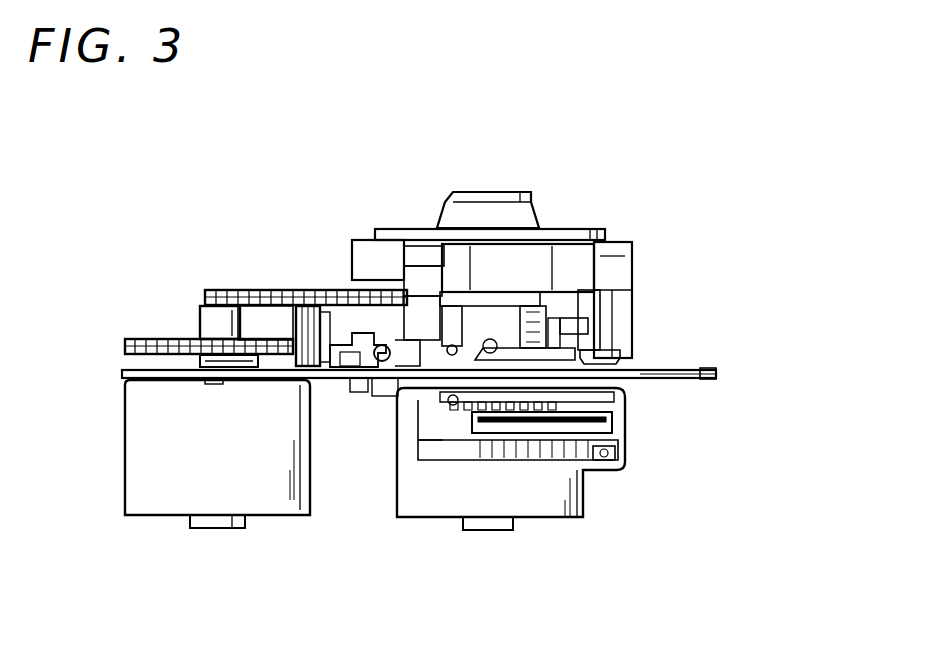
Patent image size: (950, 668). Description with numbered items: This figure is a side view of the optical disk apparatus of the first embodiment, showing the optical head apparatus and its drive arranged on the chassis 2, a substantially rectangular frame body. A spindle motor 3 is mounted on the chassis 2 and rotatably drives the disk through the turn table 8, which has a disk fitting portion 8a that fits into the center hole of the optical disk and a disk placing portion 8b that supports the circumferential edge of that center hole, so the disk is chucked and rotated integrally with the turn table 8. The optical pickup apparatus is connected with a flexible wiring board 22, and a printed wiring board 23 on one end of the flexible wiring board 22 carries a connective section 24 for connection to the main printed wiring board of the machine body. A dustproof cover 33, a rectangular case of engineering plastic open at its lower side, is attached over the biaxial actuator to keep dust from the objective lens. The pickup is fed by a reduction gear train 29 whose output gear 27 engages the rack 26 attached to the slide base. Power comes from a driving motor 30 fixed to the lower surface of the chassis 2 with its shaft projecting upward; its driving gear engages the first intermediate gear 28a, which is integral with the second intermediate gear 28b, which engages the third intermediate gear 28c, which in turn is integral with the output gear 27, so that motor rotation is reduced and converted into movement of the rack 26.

The chassis 2 is at (716, 376).
The spindle motor 3 is at (546, 500).
The turn table 8 is at (573, 132).
The disk fitting portion 8a is at (484, 226).
The disk placing portion 8b is at (566, 240).
The flexible wiring board 22 is at (588, 330).
The printed wiring board 23 is at (616, 455).
The connective section 24 is at (612, 423).
The rack 26 is at (338, 358).
The output gear 27 is at (300, 300).
The first intermediate gear 28a is at (152, 340).
The second intermediate gear 28b is at (200, 306).
The third intermediate gear 28c is at (257, 292).
The reduction gear train 29 is at (289, 262).
The driving motor 30 is at (280, 498).
The dustproof cover 33 is at (620, 242).